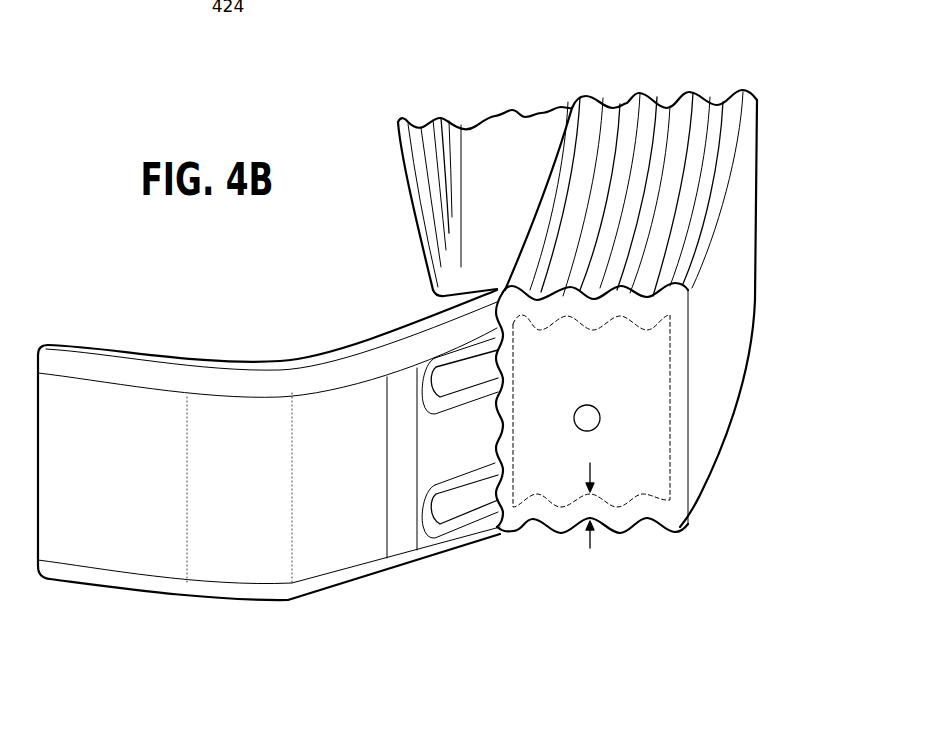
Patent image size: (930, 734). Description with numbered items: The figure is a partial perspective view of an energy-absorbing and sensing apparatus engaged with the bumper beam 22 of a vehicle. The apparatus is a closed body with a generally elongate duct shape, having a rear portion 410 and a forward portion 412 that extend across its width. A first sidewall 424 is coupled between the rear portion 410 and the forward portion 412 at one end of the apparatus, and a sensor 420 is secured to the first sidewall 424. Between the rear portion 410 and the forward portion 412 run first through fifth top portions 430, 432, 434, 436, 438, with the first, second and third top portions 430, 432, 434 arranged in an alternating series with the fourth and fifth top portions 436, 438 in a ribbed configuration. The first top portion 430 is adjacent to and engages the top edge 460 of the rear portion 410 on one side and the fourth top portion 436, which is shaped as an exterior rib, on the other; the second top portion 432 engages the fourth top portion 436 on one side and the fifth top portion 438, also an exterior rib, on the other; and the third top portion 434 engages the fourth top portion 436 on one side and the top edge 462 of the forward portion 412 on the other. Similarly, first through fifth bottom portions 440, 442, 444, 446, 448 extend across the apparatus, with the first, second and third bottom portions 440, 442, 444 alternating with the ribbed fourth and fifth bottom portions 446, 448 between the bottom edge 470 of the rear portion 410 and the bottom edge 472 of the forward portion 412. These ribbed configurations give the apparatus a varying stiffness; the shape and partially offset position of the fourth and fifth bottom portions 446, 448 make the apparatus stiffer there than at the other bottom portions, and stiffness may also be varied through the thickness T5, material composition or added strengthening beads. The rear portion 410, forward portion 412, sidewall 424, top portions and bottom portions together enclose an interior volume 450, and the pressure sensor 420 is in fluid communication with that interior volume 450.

The bumper beam 22 is at (128, 340).
The rear portion 410 is at (542, 461).
The forward portion 412 is at (662, 266).
The sensor 420 is at (597, 408).
The first sidewall 424 is at (681, 421).
The first top portion 430 is at (602, 124).
The second top portion 432 is at (667, 118).
The third top portion 434 is at (730, 97).
The fourth top portion 436 is at (635, 112).
The fifth top portion 438 is at (704, 100).
The first bottom portion 440 is at (535, 524).
The second bottom portion 442 is at (601, 530).
The third bottom portion 444 is at (667, 530).
The fourth bottom portion 446 is at (563, 535).
The fifth bottom portion 448 is at (622, 535).
The interior volume 450 is at (577, 375).
The top edge 460 is at (572, 107).
The top edge 462 is at (757, 101).
The bottom edge 470 is at (507, 527).
The bottom edge 472 is at (681, 527).
The thickness T5 is at (587, 517).